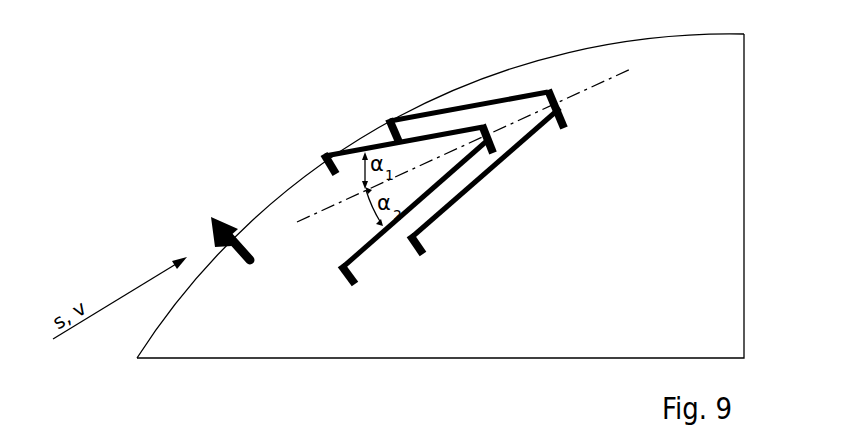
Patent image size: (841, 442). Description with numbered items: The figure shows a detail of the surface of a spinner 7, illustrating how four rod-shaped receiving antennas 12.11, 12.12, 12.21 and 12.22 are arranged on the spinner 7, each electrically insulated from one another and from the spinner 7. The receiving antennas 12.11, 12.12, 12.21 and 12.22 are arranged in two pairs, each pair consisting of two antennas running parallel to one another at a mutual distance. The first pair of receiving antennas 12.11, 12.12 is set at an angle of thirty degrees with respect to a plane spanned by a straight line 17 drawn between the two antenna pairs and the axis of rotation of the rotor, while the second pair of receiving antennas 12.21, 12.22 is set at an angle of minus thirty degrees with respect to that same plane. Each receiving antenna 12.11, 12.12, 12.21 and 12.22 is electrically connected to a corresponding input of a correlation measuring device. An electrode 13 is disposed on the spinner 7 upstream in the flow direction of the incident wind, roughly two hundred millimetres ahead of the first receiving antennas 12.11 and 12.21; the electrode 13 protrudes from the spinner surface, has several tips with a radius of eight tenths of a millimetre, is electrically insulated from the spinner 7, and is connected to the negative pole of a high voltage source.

The spinner 7 is at (711, 95).
The receiving antenna 12.11 is at (355, 149).
The receiving antenna 12.12 is at (515, 97).
The receiving antenna 12.21 is at (362, 257).
The receiving antenna 12.22 is at (430, 227).
The electrode 13 is at (222, 220).
The straight line 17 is at (596, 90).